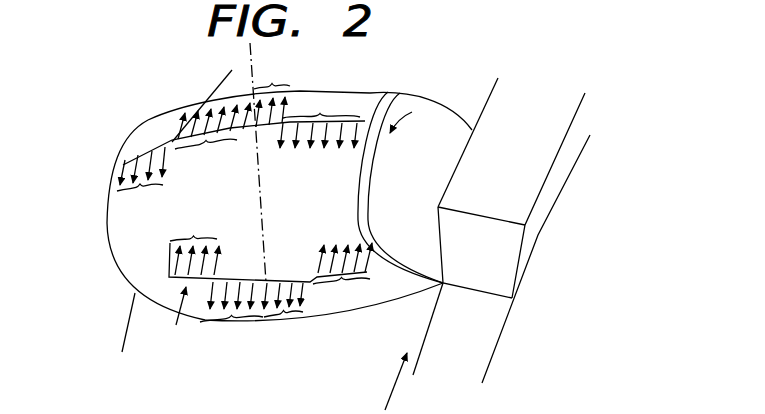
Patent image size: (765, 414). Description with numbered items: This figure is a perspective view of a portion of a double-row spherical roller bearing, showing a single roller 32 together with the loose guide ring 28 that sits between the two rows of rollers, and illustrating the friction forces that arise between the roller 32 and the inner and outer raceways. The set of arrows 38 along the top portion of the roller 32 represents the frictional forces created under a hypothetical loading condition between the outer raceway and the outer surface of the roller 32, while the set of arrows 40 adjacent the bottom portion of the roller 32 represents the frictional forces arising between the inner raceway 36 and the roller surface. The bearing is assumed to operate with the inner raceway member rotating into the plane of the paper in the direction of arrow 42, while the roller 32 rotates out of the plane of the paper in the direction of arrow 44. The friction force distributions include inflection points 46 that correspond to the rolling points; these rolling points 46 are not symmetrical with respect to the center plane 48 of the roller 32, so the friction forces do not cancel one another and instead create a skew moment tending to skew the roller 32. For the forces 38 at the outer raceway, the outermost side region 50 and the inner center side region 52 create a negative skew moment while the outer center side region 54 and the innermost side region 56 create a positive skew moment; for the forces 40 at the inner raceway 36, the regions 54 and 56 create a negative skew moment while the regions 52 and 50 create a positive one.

The loose guide ring 28 is at (480, 258).
The roller 32 is at (433, 130).
The inner raceway 36 is at (380, 345).
The set of arrows 38 is at (153, 142).
The set of arrows 40 is at (176, 325).
The arrow 42 is at (395, 388).
The arrow 44 is at (396, 110).
The inflection points 46 is at (172, 138).
The center plane 48 is at (266, 192).
The outermost side region 50 is at (168, 211).
The inner center side region 52 is at (278, 205).
The outer center side region 54 is at (219, 227).
The innermost side region 56 is at (326, 201).